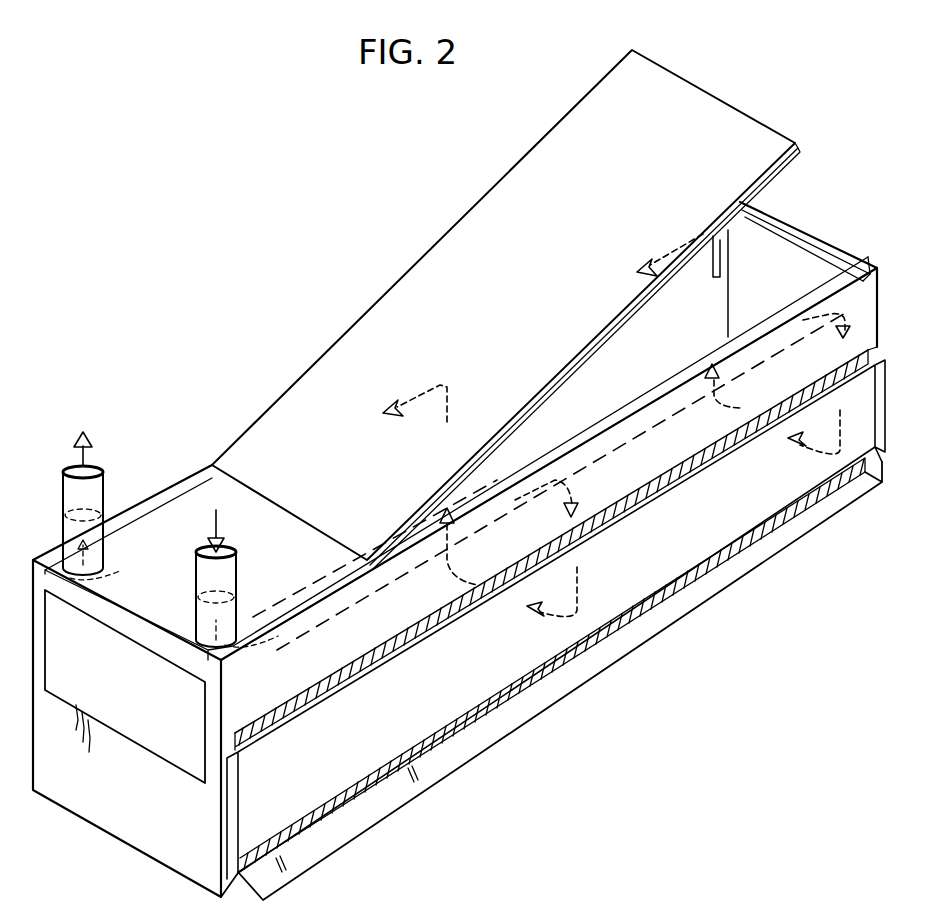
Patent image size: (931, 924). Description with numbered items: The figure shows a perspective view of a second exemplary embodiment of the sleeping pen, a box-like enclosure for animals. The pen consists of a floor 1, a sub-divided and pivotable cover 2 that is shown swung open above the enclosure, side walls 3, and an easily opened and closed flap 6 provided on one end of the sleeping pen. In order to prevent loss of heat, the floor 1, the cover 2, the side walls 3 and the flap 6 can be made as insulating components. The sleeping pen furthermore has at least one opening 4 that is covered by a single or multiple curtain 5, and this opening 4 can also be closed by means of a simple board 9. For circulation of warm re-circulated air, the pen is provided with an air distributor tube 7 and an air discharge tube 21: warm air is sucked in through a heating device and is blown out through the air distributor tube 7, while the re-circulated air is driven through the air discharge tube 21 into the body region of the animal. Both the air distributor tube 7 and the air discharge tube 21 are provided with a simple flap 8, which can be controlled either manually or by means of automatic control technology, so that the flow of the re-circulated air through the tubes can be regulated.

The floor 1 is at (612, 646).
The cover 2 is at (488, 215).
The side walls 3 is at (660, 427).
The opening 4 is at (782, 390).
The curtain 5 is at (323, 683).
The flap 6 is at (138, 735).
The air distributor tube 7 is at (567, 440).
The flap 8 is at (228, 592).
The board 9 is at (497, 688).
The air discharge tube 21 is at (63, 492).